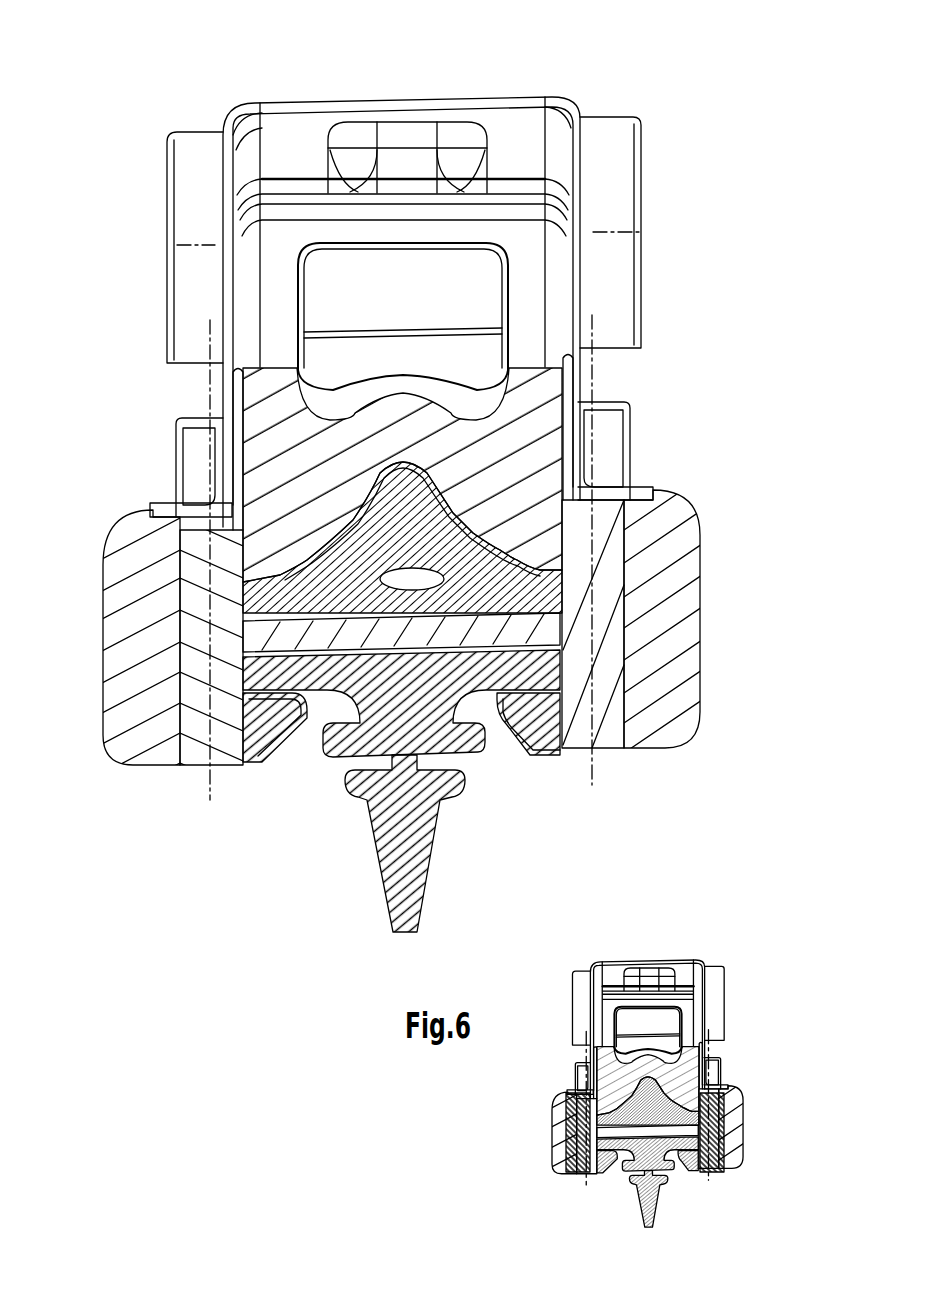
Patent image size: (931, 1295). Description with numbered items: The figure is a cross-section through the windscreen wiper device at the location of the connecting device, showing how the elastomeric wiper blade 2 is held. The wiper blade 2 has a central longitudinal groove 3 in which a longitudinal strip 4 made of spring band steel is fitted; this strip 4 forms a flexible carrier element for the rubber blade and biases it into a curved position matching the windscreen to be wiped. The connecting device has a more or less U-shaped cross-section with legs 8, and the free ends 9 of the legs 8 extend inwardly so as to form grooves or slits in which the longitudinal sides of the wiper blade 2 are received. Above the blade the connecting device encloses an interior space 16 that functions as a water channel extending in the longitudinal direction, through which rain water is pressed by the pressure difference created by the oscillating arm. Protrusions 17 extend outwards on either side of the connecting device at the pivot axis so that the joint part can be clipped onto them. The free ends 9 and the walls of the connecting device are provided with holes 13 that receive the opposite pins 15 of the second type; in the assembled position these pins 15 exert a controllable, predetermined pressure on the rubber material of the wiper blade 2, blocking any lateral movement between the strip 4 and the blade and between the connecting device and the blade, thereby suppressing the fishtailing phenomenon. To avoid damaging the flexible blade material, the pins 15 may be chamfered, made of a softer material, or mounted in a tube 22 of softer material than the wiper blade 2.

The wiper blade 2 is at (437, 830).
The central longitudinal groove 3 is at (538, 90).
The longitudinal strip 4 is at (330, 657).
The legs 8 is at (103, 606).
The free ends 9 is at (262, 752).
The holes 13 is at (180, 656).
The pins of the second type 15 is at (193, 752).
The interior space 16 is at (403, 303).
The protrusions 17 is at (187, 300).
The tube 22 is at (562, 1093).